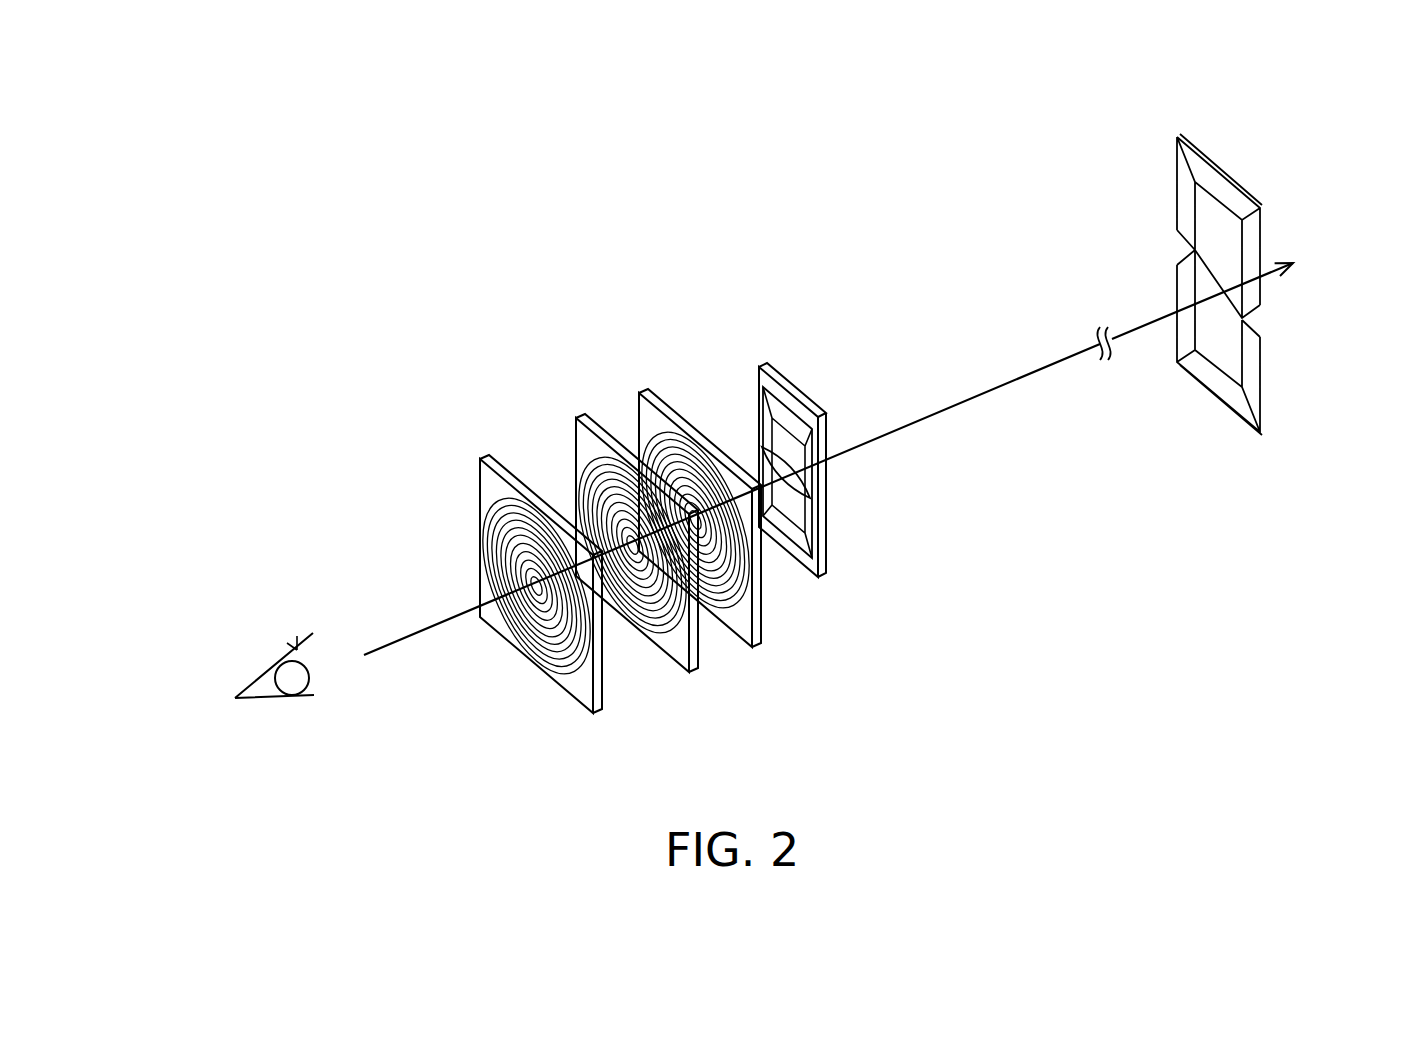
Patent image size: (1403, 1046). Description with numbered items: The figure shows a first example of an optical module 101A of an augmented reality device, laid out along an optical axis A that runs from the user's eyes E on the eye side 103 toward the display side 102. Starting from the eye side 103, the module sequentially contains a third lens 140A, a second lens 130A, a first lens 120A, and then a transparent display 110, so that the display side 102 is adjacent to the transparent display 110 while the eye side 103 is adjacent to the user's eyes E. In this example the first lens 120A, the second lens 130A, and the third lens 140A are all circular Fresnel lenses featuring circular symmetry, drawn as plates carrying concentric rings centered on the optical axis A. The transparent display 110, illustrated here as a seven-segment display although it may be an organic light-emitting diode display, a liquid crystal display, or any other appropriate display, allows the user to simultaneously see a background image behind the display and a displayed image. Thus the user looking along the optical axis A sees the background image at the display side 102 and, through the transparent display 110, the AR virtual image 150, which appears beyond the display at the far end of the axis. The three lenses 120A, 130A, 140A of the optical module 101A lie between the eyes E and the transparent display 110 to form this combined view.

The optical axis A is at (946, 405).
The user's eyes E is at (262, 677).
The eye side 103 is at (162, 716).
The third lens 140A is at (493, 483).
The second lens 130A is at (586, 438).
The first lens 120A is at (651, 413).
The transparent display 110 is at (798, 383).
The AR virtual image 150 is at (1220, 178).
The display side 102 is at (1382, 156).
The optical module 101A is at (1335, 750).